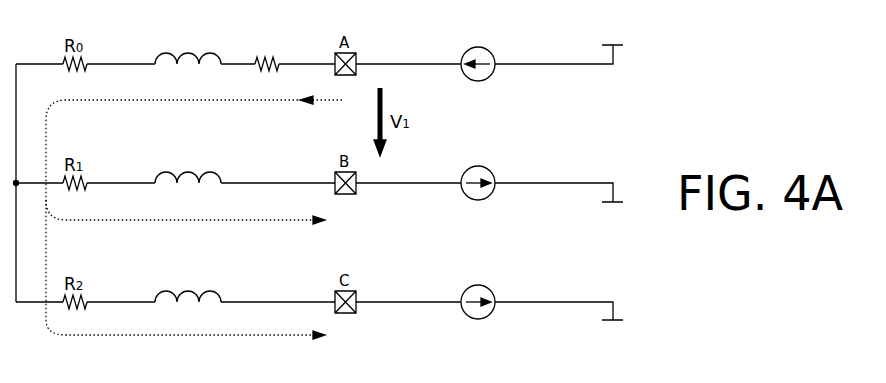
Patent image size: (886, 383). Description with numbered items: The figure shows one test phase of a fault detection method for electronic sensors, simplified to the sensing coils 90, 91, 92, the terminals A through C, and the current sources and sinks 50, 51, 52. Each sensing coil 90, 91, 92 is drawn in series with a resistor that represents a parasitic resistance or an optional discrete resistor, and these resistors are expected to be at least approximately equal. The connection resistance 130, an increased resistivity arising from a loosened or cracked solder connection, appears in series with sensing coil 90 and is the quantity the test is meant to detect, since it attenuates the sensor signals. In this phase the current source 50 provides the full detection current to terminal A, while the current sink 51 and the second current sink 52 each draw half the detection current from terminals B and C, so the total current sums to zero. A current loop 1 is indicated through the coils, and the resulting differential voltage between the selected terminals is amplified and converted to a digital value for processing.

The current path 1 is at (194, 217).
The current source 50 is at (481, 47).
The current sink 51 is at (481, 166).
The second current sink 52 is at (481, 285).
The sensing coil 90 is at (172, 53).
The sensing coil 91 is at (172, 172).
The sensing coil 92 is at (172, 291).
The connection resistance 130 is at (262, 57).